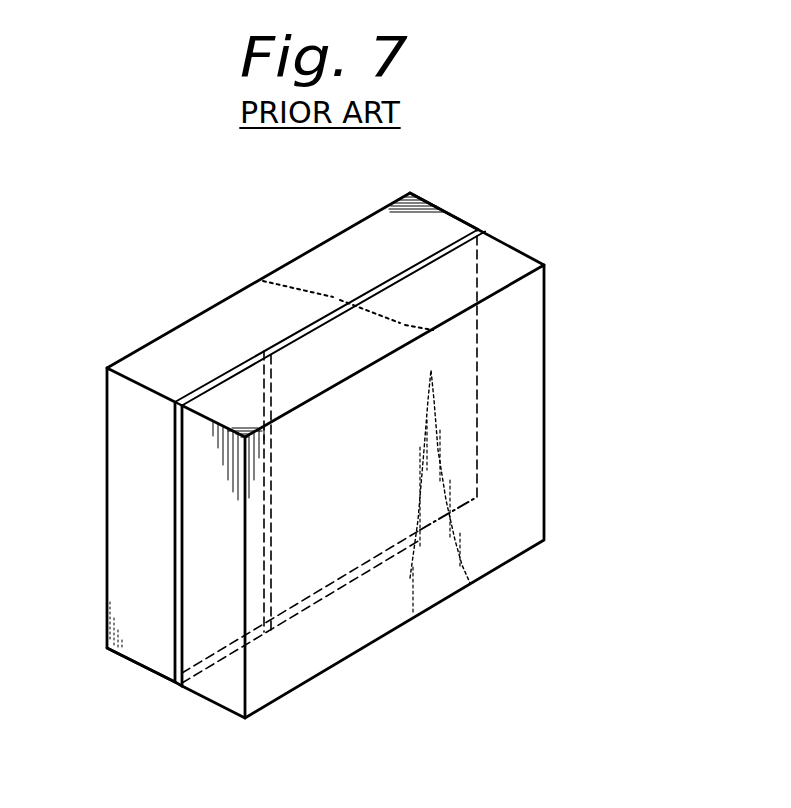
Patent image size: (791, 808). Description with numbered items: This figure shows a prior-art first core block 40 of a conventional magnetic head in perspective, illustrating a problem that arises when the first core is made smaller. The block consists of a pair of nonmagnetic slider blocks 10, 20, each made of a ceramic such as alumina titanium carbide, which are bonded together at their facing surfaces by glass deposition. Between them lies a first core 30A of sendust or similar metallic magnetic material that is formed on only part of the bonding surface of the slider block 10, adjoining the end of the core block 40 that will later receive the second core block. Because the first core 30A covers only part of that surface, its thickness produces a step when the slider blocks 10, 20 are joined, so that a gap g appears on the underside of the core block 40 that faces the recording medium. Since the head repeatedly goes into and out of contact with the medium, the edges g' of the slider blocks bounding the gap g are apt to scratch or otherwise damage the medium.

The slider block 10 is at (322, 275).
The slider block 20 is at (398, 333).
The first core 30A is at (177, 503).
The first core block 40 is at (583, 284).
The gap g is at (329, 474).
The edges g' is at (427, 506).